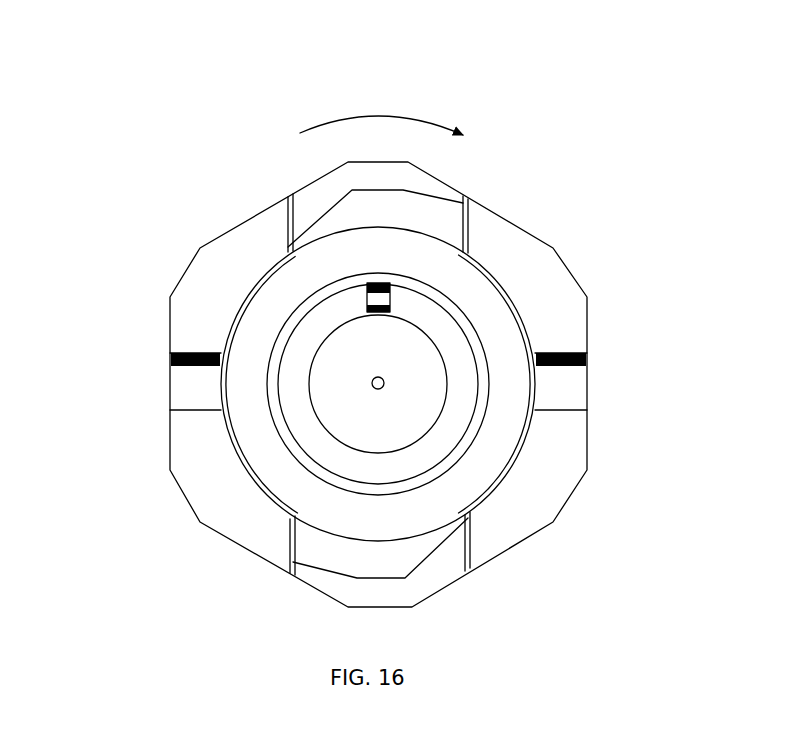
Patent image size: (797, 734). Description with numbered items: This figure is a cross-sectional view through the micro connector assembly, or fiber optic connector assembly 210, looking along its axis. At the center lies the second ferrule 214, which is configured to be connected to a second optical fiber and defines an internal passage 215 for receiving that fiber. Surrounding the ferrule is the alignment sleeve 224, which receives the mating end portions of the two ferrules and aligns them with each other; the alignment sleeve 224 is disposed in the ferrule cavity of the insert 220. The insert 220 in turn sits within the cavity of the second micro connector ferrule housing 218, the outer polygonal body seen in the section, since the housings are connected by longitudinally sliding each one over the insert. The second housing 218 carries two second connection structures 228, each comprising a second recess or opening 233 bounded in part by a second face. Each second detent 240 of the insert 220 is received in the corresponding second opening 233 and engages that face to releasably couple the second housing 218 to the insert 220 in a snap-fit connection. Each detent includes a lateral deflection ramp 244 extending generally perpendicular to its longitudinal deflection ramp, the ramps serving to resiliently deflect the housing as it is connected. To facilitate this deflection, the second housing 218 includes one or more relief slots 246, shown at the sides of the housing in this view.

The fiber optic connector assembly 210 is at (214, 90).
The second ferrule 214 is at (383, 388).
The internal passage 215 is at (414, 401).
The second micro connector ferrule housing 218 is at (166, 498).
The insert 220 is at (272, 257).
The alignment sleeve 224 is at (451, 340).
The second connection structure 228 is at (453, 183).
The second recess or opening 233 is at (317, 211).
The second detent 240 is at (435, 218).
The lateral deflection ramp 244 is at (320, 225).
The relief slot 246 is at (189, 392).